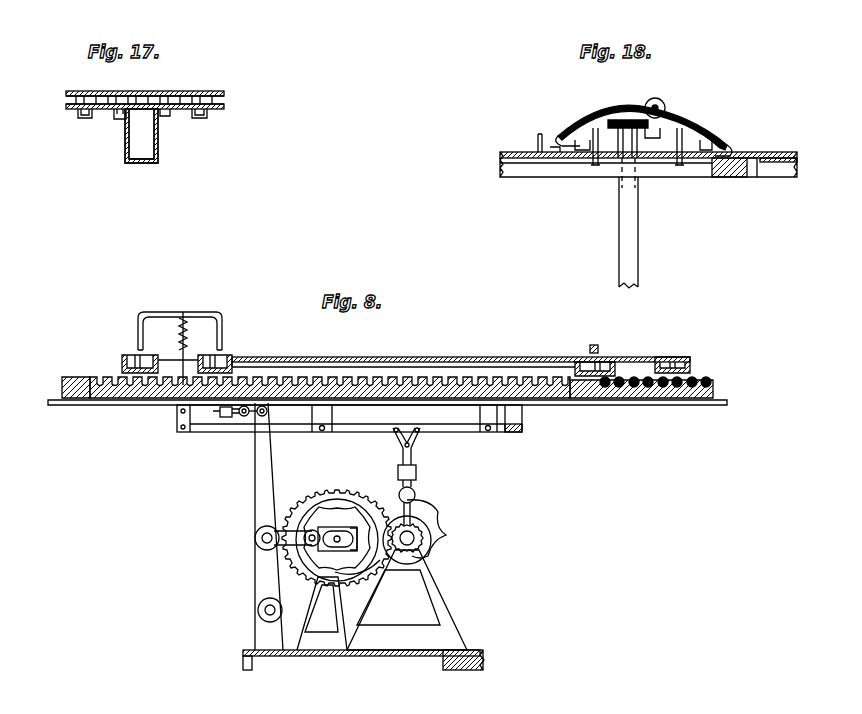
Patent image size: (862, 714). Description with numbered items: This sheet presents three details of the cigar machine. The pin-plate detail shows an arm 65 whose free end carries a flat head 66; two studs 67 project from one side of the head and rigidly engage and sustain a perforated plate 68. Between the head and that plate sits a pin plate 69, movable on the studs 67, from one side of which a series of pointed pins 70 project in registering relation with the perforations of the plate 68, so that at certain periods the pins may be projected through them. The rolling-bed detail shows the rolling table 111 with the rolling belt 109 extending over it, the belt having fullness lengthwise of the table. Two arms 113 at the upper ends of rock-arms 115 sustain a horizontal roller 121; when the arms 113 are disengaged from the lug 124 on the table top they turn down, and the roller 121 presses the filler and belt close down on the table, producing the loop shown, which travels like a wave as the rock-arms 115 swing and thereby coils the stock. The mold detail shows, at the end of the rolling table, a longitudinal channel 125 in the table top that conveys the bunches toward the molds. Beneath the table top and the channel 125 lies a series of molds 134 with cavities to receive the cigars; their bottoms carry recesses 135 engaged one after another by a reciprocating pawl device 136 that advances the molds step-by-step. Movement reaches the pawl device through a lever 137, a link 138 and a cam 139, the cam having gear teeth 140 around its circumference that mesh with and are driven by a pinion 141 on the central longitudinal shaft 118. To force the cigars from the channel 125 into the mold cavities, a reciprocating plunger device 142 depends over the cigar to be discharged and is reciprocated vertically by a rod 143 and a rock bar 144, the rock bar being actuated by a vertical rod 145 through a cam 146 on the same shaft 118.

In FIG. 17, the arm 65 is at (158, 150).
In FIG. 17, the flat head 66 is at (118, 119).
In FIG. 17, the studs 67 is at (176, 96).
In FIG. 17, the perforated plate 68 is at (224, 94).
In FIG. 17, the pin plate 69 is at (224, 108).
In FIG. 17, the pointed pins 70 is at (66, 103).
In FIG. 18, the rolling belt 109 is at (598, 112).
In FIG. 18, the rolling table 111 is at (690, 178).
In FIG. 18, the arms 113 is at (640, 118).
In FIG. 18, the rock-arms 115 is at (619, 213).
In FIG. 8, the central longitudinal shaft 118 is at (414, 538).
In FIG. 18, the horizontal roller 121 is at (665, 106).
In FIG. 18, the lug 124 is at (536, 134).
In FIG. 18, the longitudinal channel 125 is at (732, 150).
In FIG. 8, the longitudinal channel 125 is at (122, 360).
In FIG. 8, the molds 134 is at (92, 398).
In FIG. 8, the recesses 135 is at (680, 400).
In FIG. 8, the reciprocating pawl device 136 is at (250, 416).
In FIG. 8, the lever 137 is at (255, 502).
In FIG. 8, the link 138 is at (290, 545).
In FIG. 8, the cam 139 is at (345, 513).
In FIG. 8, the gear teeth 140 is at (326, 492).
In FIG. 8, the pinion 141 is at (431, 545).
In FIG. 8, the reciprocating plunger device 142 is at (180, 312).
In FIG. 8, the rod 143 is at (187, 340).
In FIG. 8, the rock bar 144 is at (200, 432).
In FIG. 8, the vertical rod 145 is at (413, 462).
In FIG. 8, the cam 146 is at (420, 515).